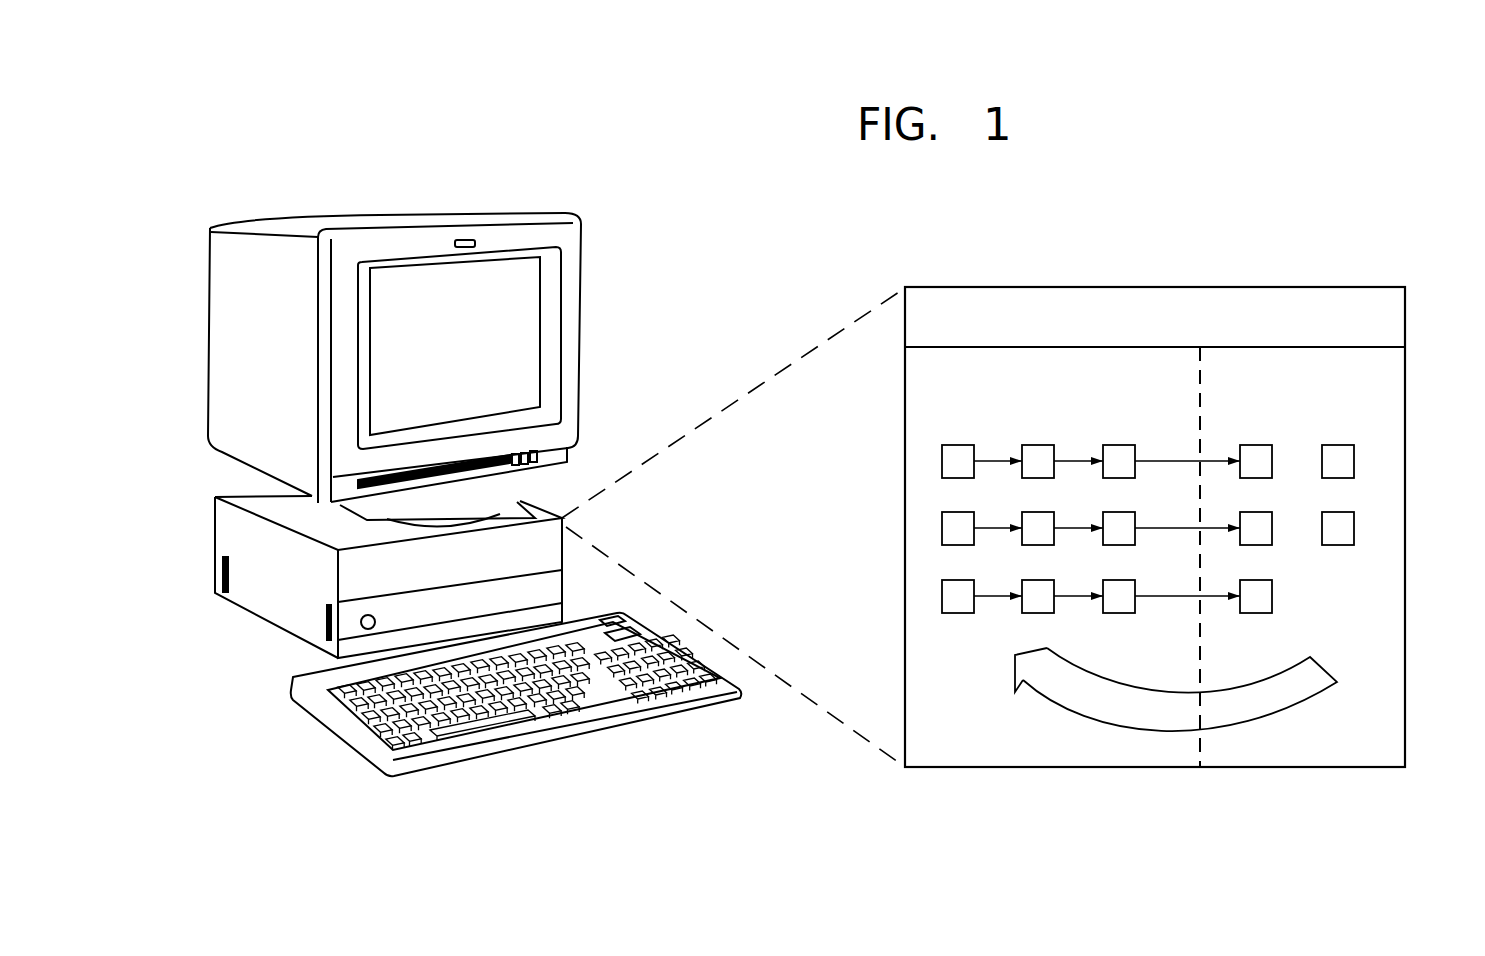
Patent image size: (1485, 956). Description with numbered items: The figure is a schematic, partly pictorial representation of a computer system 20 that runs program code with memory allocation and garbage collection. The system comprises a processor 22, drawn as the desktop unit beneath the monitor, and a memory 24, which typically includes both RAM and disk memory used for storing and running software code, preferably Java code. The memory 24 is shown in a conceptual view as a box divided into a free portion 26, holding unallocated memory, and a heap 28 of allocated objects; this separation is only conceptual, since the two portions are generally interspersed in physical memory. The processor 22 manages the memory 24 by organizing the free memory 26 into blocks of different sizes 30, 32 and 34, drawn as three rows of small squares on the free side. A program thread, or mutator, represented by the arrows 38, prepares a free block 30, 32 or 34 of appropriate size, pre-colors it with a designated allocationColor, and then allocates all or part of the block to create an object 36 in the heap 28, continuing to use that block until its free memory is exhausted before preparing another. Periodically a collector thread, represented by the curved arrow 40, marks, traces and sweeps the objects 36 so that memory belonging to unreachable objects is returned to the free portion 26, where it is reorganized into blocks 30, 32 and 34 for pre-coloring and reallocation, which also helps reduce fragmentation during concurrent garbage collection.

The computer system 20 is at (300, 144).
The processor 22 is at (215, 550).
The memory 24 is at (1406, 310).
The free portion 26 is at (1077, 768).
The heap 28 is at (1295, 768).
The block 30 is at (1107, 445).
The block 32 is at (977, 542).
The block 34 is at (963, 614).
The object 36 is at (1273, 527).
The arrows 38 is at (1175, 455).
The arrow 40 is at (1277, 714).